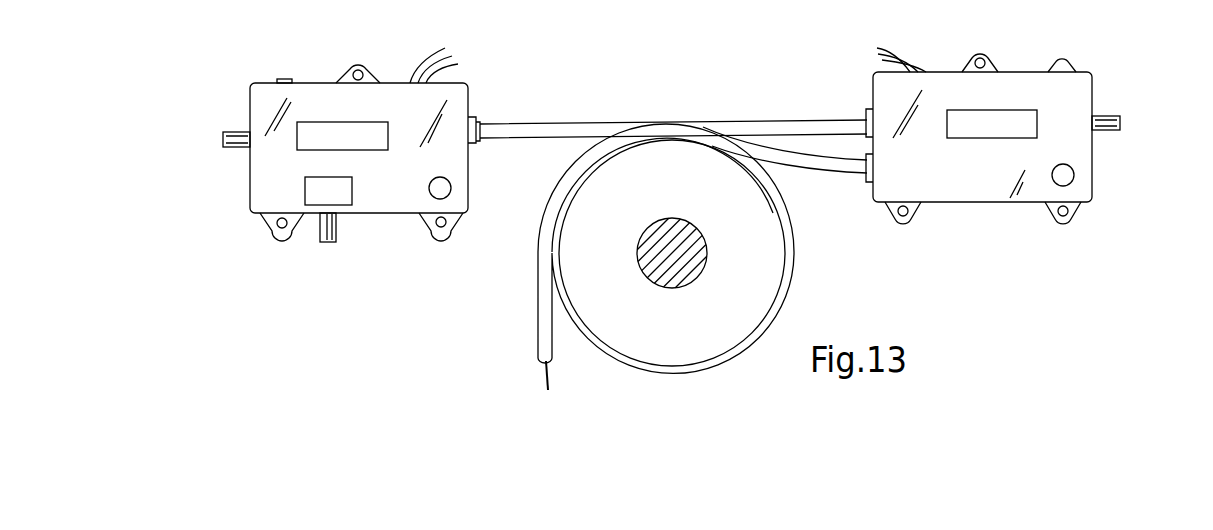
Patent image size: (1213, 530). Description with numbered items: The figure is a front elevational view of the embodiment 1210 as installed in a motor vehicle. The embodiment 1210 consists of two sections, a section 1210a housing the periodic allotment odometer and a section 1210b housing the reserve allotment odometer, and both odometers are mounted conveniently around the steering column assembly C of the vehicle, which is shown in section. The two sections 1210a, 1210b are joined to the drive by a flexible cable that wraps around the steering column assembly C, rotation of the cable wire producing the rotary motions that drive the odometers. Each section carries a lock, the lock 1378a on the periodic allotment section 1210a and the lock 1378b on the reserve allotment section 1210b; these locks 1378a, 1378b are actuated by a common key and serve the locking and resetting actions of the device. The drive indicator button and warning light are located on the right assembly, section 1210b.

The embodiment 1210 is at (312, 134).
The section 1210a is at (309, 76).
The section 1210b is at (1031, 62).
The lock 1378a is at (432, 197).
The lock 1378b is at (1075, 178).
The steering column assembly C is at (803, 273).